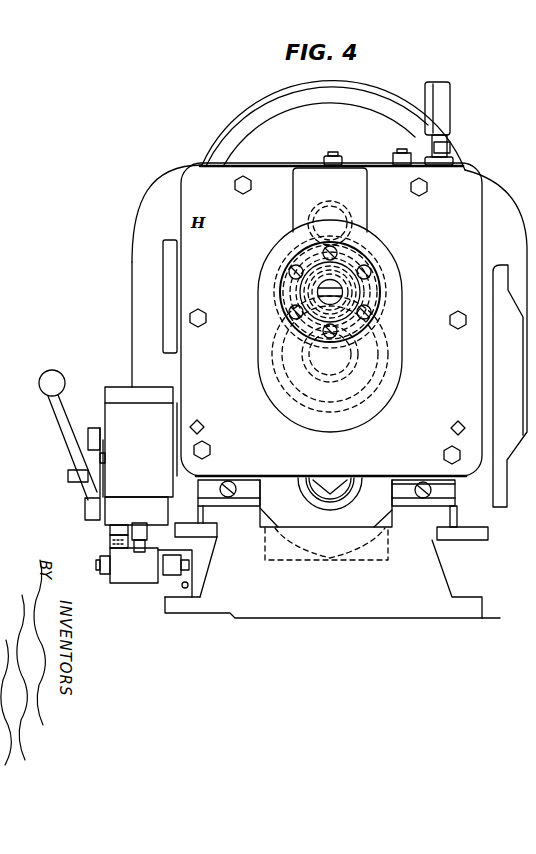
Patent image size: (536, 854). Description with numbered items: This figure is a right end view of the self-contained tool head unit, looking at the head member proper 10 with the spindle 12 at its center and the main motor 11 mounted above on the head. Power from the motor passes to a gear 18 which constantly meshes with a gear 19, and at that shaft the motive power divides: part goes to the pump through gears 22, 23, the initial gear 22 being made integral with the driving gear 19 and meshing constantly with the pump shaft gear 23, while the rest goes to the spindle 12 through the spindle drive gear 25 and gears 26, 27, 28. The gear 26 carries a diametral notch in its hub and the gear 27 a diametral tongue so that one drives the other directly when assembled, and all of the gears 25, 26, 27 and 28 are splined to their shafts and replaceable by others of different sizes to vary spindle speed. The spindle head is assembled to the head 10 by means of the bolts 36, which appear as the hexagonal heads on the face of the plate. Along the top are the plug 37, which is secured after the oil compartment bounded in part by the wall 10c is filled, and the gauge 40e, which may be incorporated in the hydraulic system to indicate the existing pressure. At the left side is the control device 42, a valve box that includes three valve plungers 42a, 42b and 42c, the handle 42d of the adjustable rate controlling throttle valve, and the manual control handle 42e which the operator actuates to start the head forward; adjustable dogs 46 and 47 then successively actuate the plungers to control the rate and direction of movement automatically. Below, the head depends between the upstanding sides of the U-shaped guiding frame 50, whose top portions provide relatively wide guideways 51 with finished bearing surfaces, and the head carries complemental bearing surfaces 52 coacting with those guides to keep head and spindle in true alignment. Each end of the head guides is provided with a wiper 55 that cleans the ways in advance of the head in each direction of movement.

The head member proper 10 is at (518, 202).
The wall 10c is at (326, 519).
The main motor 11 is at (332, 144).
The spindle 12 is at (281, 292).
The gear 18 is at (338, 206).
The gear 19 is at (292, 262).
The gear 22 is at (276, 298).
The pump shaft gear 23 is at (300, 347).
The spindle drive gear 25 is at (363, 262).
The gear 26 is at (378, 383).
The gear 27 is at (372, 351).
The gear 28 is at (378, 294).
The bolts 36 is at (424, 196).
The plug 37 is at (397, 151).
The gauge 40e is at (450, 112).
The control device 42 is at (139, 456).
The valve plunger 42a is at (110, 532).
The valve plunger 42b is at (158, 516).
The valve plunger 42c is at (153, 489).
The throttle valve handle 42d is at (68, 476).
The manual control handle 42e is at (63, 437).
The feed dog 46 is at (134, 548).
The reverse dog 47 is at (117, 584).
The guiding frame 50 is at (332, 577).
The guideways 51 is at (211, 507).
The bearing surfaces 52 is at (198, 512).
The wiper 55 is at (410, 484).